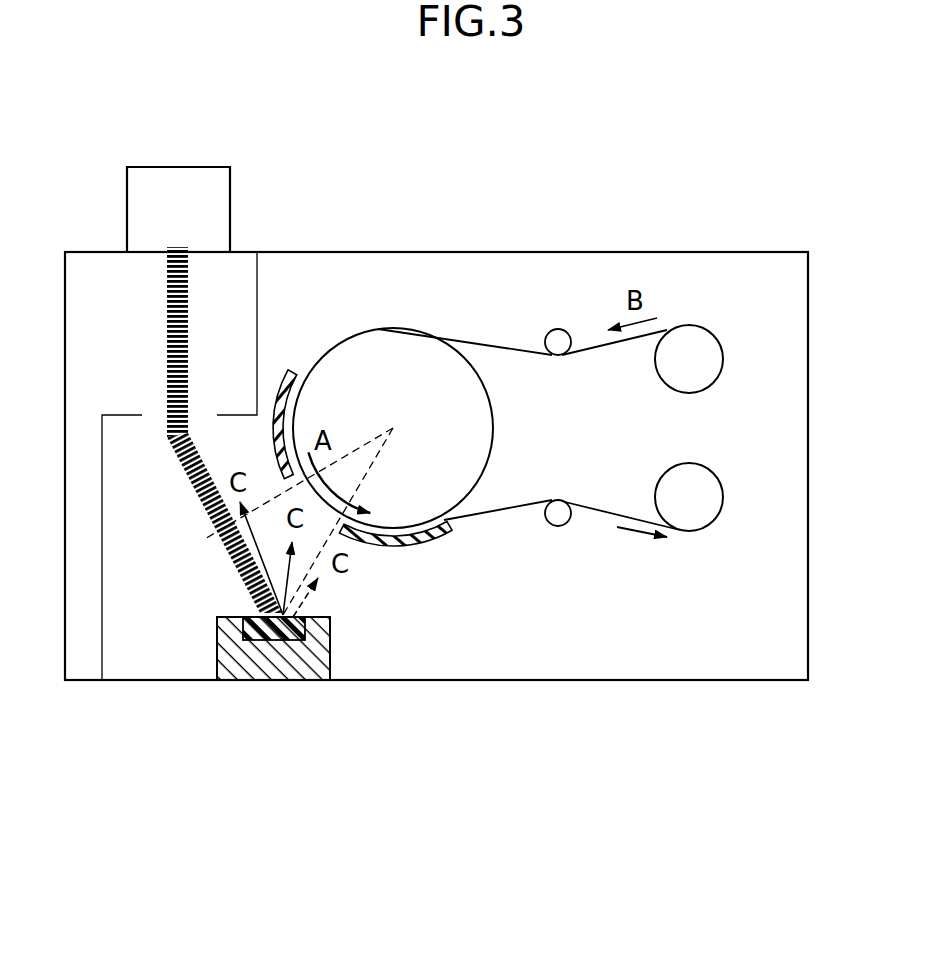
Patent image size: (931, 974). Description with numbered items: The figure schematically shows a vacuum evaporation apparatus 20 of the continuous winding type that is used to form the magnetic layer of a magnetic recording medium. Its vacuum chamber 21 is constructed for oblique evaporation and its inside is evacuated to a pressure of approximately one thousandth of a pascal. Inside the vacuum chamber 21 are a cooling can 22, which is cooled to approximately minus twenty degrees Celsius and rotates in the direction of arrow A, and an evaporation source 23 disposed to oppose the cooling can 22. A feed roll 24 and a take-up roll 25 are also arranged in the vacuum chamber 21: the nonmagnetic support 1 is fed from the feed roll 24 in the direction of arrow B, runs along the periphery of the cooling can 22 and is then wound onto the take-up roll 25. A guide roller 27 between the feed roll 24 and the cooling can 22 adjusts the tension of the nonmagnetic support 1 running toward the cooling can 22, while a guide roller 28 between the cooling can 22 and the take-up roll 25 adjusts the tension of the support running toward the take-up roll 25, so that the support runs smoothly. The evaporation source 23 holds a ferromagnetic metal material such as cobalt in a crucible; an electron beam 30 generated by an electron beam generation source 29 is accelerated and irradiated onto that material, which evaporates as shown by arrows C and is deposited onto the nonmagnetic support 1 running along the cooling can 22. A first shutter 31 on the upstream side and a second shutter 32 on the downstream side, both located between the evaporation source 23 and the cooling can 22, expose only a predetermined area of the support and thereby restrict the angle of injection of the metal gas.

The nonmagnetic support 1 is at (527, 347).
The vacuum evaporation apparatus 20 is at (680, 706).
The vacuum chamber 21 is at (800, 450).
The cooling can 22 is at (374, 345).
The evaporation source 23 is at (272, 630).
The feed roll 24 is at (710, 358).
The take-up roll 25 is at (710, 500).
The guide roller 27 is at (558, 340).
The guide roller 28 is at (558, 512).
The electron beam generation source 29 is at (216, 178).
The electron beam 30 is at (167, 347).
The first shutter 31 is at (293, 372).
The second shutter 32 is at (438, 537).